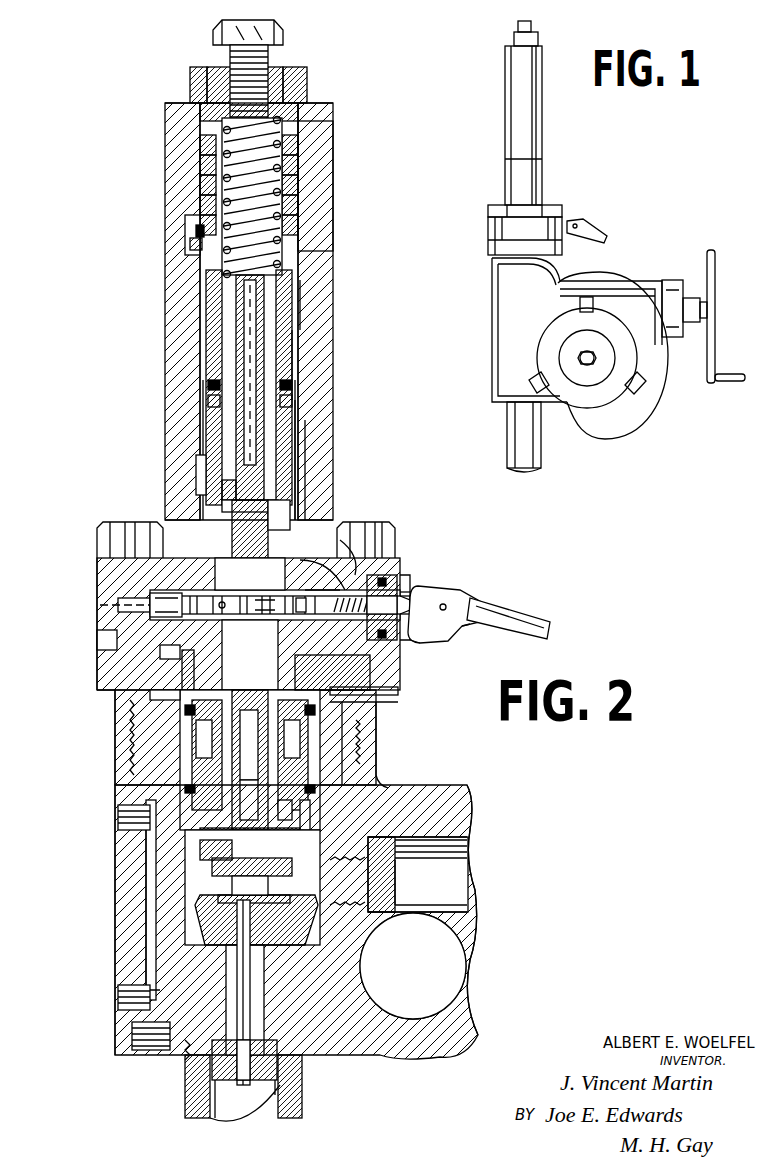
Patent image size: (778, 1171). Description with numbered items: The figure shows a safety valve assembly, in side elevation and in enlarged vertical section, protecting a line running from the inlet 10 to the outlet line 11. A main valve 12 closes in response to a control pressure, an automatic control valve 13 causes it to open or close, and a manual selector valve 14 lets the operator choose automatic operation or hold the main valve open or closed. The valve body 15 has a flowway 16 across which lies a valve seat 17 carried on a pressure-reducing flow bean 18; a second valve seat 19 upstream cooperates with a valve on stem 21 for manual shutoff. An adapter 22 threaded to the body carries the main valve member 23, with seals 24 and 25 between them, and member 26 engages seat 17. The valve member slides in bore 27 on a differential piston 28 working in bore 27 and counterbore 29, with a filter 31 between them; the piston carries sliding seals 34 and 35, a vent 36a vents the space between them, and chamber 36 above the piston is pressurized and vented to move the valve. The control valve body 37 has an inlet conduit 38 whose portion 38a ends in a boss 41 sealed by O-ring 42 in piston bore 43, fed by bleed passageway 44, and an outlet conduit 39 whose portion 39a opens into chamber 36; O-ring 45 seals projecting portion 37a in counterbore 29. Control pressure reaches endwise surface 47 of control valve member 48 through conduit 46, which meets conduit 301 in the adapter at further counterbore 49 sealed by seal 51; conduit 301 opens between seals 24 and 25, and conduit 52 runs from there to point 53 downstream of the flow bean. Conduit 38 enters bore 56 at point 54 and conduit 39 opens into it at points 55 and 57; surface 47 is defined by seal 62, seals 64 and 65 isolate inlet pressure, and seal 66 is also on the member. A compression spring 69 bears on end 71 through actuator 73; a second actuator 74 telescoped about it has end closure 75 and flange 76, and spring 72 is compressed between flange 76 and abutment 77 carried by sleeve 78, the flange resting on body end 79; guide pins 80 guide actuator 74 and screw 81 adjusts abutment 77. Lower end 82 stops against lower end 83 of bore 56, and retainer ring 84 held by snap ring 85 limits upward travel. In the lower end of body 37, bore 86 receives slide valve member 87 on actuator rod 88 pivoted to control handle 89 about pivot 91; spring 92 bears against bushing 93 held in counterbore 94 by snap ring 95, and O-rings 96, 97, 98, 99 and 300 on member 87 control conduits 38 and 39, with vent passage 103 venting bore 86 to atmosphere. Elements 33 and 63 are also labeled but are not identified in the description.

In FIG. 2, the inlet 10 is at (457, 968).
In FIG. 1, the outlet line 11 is at (509, 452).
In FIG. 2, the outlet line 11 is at (303, 1090).
In FIG. 1, the main valve 12 is at (488, 367).
In FIG. 2, the main valve 12 is at (100, 924).
In FIG. 1, the automatic control valve 13 is at (545, 135).
In FIG. 2, the automatic control valve 13 is at (334, 365).
In FIG. 1, the manual selector valve 14 is at (567, 216).
In FIG. 2, the manual selector valve 14 is at (410, 555).
In FIG. 2, the valve body 15 is at (450, 786).
In FIG. 2, the flowway 16 is at (322, 896).
In FIG. 2, the valve seat 17 is at (268, 903).
In FIG. 2, the flow bean 18 is at (245, 1115).
In FIG. 2, the second valve seat 19 is at (397, 886).
In FIG. 1, the stem 21 is at (704, 300).
In FIG. 2, the adapter 22 is at (356, 718).
In FIG. 2, the main valve member 23 is at (212, 860).
In FIG. 2, the seal 24 is at (383, 802).
In FIG. 2, the seal 25 is at (330, 843).
In FIG. 2, the member 26 is at (238, 878).
In FIG. 2, the bore 27 is at (282, 803).
In FIG. 2, the differential piston 28 is at (216, 762).
In FIG. 2, the counterbore 29 is at (300, 740).
In FIG. 2, the filter 31 is at (286, 812).
In FIG. 2, the disc cap 33 is at (268, 874).
In FIG. 2, the sliding seal 34 is at (290, 782).
In FIG. 2, the sliding seal 35 is at (360, 703).
In FIG. 2, the chamber 36 is at (352, 690).
In FIG. 2, the vent 36a is at (362, 745).
In FIG. 2, the control valve body 37 is at (302, 472).
In FIG. 2, the body portion 37a is at (320, 690).
In FIG. 2, the inlet conduit 38 is at (310, 458).
In FIG. 2, the inlet conduit portion 38a is at (262, 698).
In FIG. 2, the outlet conduit 39 is at (205, 488).
In FIG. 2, the outlet conduit portion 39a is at (180, 706).
In FIG. 2, the boss 41 is at (248, 745).
In FIG. 2, the O-ring 42 is at (234, 694).
In FIG. 2, the bore 43 is at (252, 782).
In FIG. 2, the bleed passageway 44 is at (212, 830).
In FIG. 2, the O-ring seal 45 is at (190, 665).
In FIG. 2, the conduit 46 is at (125, 575).
In FIG. 2, the endwise surface 47 is at (234, 522).
In FIG. 2, the control valve member 48 is at (322, 342).
In FIG. 2, the further counterbore 49 is at (160, 652).
In FIG. 2, the seal 51 is at (125, 640).
In FIG. 2, the control pressure conduit 52 is at (148, 852).
In FIG. 2, the point 53 is at (190, 1050).
In FIG. 2, the point 54 is at (300, 396).
In FIG. 2, the point 55 is at (203, 462).
In FIG. 2, the bore 56 is at (290, 512).
In FIG. 2, the point 57 is at (210, 348).
In FIG. 2, the seal 62 is at (312, 545).
In FIG. 2, the upper stem 63 is at (254, 482).
In FIG. 2, the seal 64 is at (208, 400).
In FIG. 2, the seal 65 is at (208, 385).
In FIG. 2, the seal 66 is at (214, 318).
In FIG. 2, the compression spring 69 is at (326, 112).
In FIG. 2, the end 71 is at (285, 260).
In FIG. 2, the spring 72 is at (298, 150).
In FIG. 2, the actuator 73 is at (298, 190).
In FIG. 2, the second actuator 74 is at (298, 170).
In FIG. 2, the end closure 75 is at (288, 84).
In FIG. 2, the flange 76 is at (298, 208).
In FIG. 2, the abutment 77 is at (318, 97).
In FIG. 2, the sleeve 78 is at (333, 137).
In FIG. 2, the end 79 is at (300, 230).
In FIG. 2, the guide pins 80 is at (188, 236).
In FIG. 2, the screw 81 is at (262, 72).
In FIG. 2, the lower end 82 is at (222, 500).
In FIG. 2, the lower end 83 is at (228, 520).
In FIG. 2, the retainer ring 84 is at (202, 244).
In FIG. 2, the snap ring 85 is at (196, 231).
In FIG. 2, the bore 86 is at (360, 542).
In FIG. 2, the slide valve member 87 is at (268, 618).
In FIG. 2, the actuator rod 88 is at (430, 592).
In FIG. 1, the control handle 89 is at (607, 227).
In FIG. 2, the control handle 89 is at (545, 634).
In FIG. 2, the pivot 91 is at (500, 608).
In FIG. 2, the spring 92 is at (386, 580).
In FIG. 2, the bushing 93 is at (420, 645).
In FIG. 2, the counterbore 94 is at (402, 592).
In FIG. 2, the snap ring 95 is at (402, 642).
In FIG. 2, the O-ring 96 is at (308, 594).
In FIG. 2, the O-ring 97 is at (300, 618).
In FIG. 2, the O-ring 98 is at (224, 620).
In FIG. 2, the O-ring 99 is at (202, 620).
In FIG. 2, the vent passage 103 is at (118, 600).
In FIG. 2, the O-ring 300 is at (155, 538).
In FIG. 2, the conduit 301 is at (140, 740).